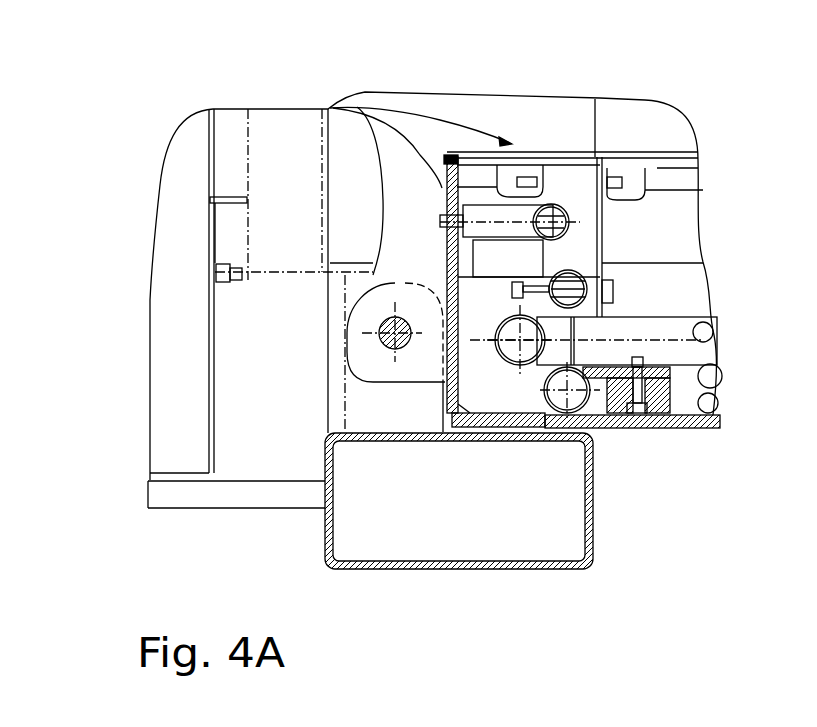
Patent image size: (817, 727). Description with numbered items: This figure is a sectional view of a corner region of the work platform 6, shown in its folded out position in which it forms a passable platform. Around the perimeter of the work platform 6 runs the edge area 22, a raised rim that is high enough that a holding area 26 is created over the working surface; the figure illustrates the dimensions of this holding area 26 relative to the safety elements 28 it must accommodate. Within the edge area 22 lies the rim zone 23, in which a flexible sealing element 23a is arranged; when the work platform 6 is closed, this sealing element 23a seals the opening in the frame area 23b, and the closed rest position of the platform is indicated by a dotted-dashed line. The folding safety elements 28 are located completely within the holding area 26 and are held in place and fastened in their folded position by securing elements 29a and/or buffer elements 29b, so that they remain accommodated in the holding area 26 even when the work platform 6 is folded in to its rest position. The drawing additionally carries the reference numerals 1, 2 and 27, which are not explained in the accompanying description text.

The machine 1 is at (290, 539).
The housing 2 is at (483, 277).
The work platform 6 is at (659, 451).
The edge area 22 is at (437, 258).
The rim zone 23 is at (447, 208).
The flexible sealing element 23a is at (445, 156).
The frame area 23b is at (212, 245).
The holding area 26 is at (513, 395).
The support plate 27 is at (681, 407).
The safety elements 28 is at (613, 277).
The securing elements 29a is at (534, 212).
The buffer elements 29b is at (663, 400).